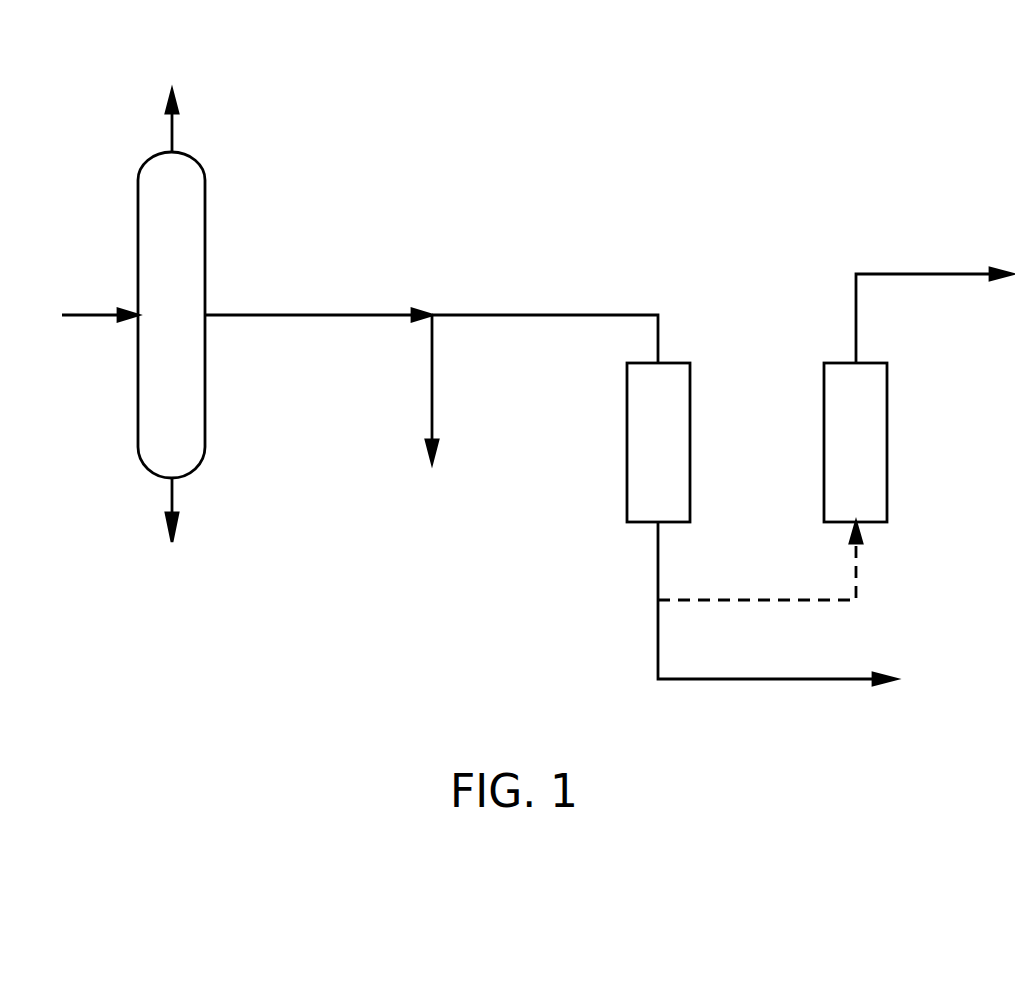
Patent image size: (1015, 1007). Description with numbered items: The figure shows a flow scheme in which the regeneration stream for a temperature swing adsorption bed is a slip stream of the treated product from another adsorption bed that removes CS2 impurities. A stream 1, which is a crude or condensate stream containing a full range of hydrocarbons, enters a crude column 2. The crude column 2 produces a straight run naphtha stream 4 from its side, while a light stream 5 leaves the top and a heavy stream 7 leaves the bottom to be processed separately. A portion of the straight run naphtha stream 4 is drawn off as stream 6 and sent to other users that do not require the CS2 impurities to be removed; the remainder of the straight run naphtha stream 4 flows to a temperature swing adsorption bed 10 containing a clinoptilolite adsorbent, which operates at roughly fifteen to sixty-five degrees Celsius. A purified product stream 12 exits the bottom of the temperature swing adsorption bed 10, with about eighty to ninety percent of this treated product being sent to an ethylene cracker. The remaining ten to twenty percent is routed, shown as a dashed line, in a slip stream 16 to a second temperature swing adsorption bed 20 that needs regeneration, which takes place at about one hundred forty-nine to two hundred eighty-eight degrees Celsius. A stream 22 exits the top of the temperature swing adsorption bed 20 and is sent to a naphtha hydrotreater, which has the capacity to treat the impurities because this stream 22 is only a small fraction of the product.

The stream 1 is at (101, 313).
The crude column 2 is at (162, 331).
The straight run naphtha stream 4 is at (304, 313).
The light stream 5 is at (172, 132).
The stream 6 is at (433, 387).
The heavy stream 7 is at (170, 497).
The temperature swing adsorption bed 10 is at (640, 453).
The purified product stream 12 is at (657, 637).
The slip stream 16 is at (760, 598).
The temperature swing adsorption bed 20 is at (837, 453).
The stream 22 is at (934, 272).